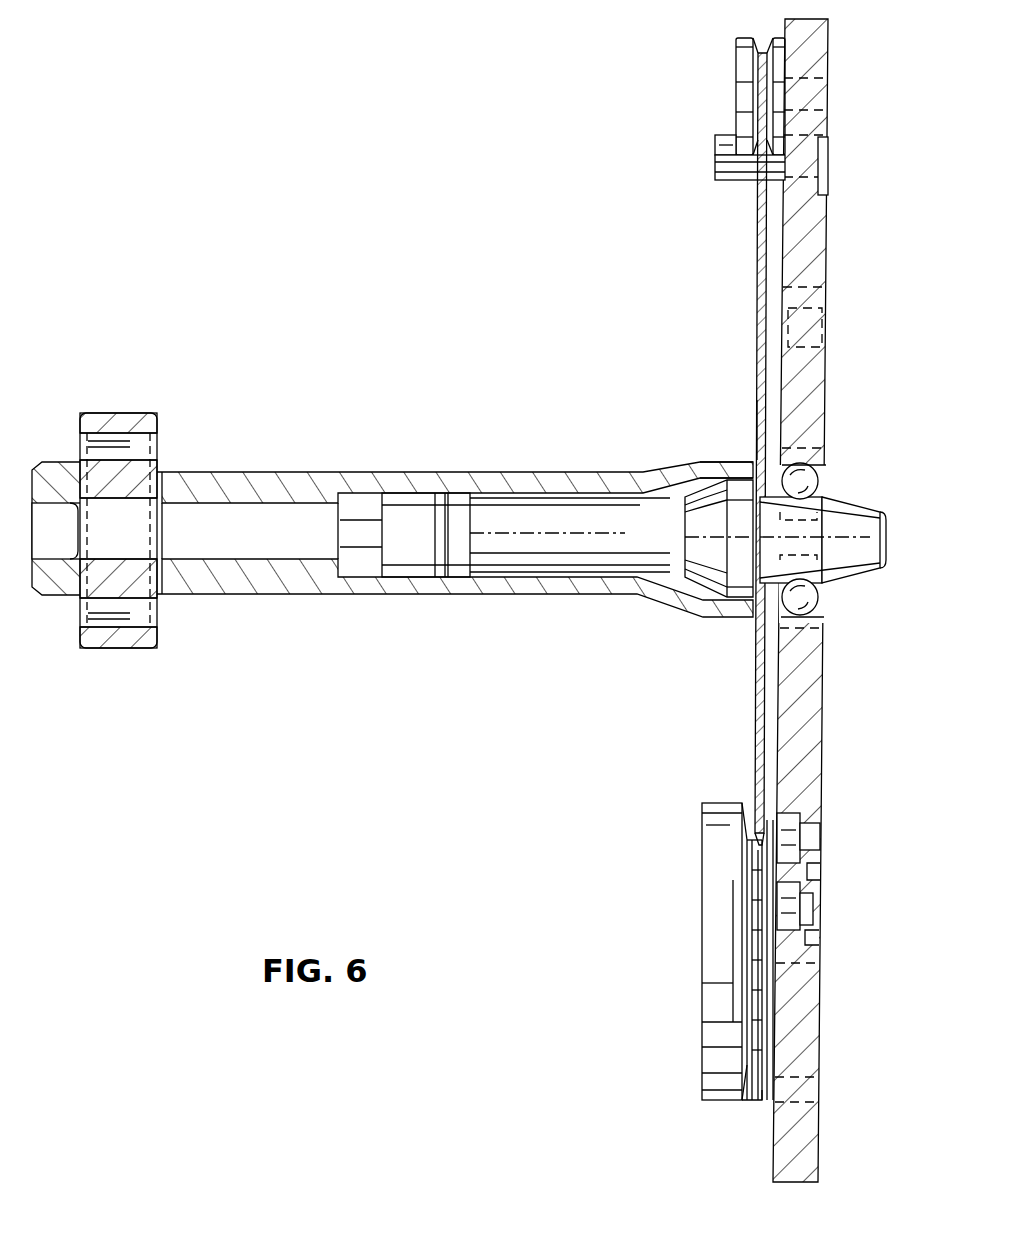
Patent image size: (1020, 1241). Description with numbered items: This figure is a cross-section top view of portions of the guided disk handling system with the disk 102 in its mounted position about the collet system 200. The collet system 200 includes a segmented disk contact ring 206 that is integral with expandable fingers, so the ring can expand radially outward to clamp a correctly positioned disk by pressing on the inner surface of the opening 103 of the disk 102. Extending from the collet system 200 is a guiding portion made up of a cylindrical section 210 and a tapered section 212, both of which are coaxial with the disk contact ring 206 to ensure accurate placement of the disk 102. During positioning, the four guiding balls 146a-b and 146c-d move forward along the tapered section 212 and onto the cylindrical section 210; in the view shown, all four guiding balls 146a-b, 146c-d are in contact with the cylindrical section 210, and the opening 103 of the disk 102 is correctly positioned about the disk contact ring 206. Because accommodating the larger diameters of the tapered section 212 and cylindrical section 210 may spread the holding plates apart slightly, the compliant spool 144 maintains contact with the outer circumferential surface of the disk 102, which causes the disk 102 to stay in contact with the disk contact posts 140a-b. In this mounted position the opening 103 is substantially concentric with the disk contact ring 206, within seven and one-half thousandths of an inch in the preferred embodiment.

The disk 102 is at (756, 340).
The opening 103 is at (757, 421).
The disk contact posts 140a-b is at (718, 152).
The compliant spool 144 is at (715, 963).
The guiding balls 146a-b is at (813, 478).
The guiding balls 146c-d is at (797, 600).
The collet system 200 is at (469, 610).
The disk contact ring 206 is at (758, 447).
The cylindrical section 210 is at (732, 611).
The tapered section 212 is at (849, 585).